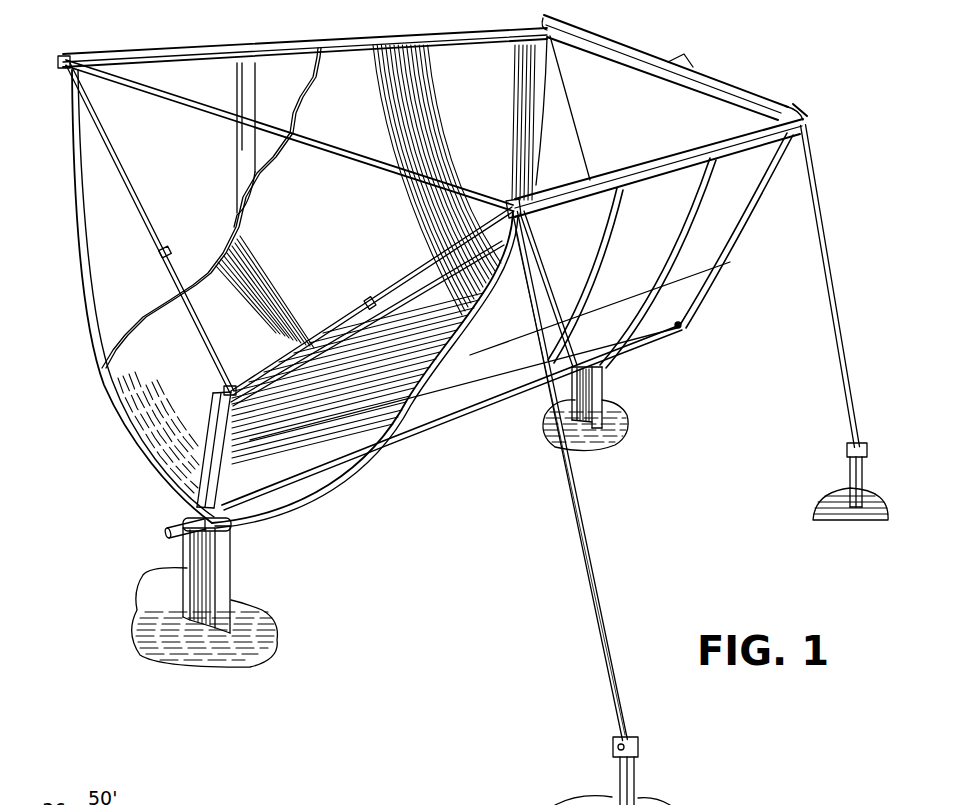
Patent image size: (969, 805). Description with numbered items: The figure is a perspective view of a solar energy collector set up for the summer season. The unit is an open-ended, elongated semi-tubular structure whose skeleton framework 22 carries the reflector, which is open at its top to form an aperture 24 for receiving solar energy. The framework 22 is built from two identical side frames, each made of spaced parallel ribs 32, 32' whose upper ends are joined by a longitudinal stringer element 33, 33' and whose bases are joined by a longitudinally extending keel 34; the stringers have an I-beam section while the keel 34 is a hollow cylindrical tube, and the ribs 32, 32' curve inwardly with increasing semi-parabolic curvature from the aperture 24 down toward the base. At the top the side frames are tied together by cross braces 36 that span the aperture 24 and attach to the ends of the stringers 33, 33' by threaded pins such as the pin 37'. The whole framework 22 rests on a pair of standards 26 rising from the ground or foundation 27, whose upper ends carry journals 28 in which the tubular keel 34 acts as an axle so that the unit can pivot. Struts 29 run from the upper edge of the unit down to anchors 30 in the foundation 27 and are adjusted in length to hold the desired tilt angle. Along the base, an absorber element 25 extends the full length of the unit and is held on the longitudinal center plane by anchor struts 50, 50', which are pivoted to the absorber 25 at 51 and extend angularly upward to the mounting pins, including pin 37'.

The skeleton framework 22 is at (74, 262).
The aperture 24 is at (687, 45).
The absorber element 25 is at (411, 318).
The standards 26 is at (183, 571).
The foundation 27 is at (268, 634).
The journals 28 is at (232, 524).
The struts 29 is at (822, 268).
The anchors 30 is at (850, 468).
The ribs 32 is at (670, 250).
The ribs 32' is at (232, 122).
The longitudinal stringer element 33 is at (659, 168).
The longitudinal stringer element 33' is at (305, 42).
The keel 34 is at (165, 534).
The cross braces 36 is at (318, 142).
The mounting pin 37' is at (289, 116).
The anchor strut 50 is at (372, 301).
The anchor strut 50' is at (150, 228).
The pivot of anchor struts 51 is at (218, 392).